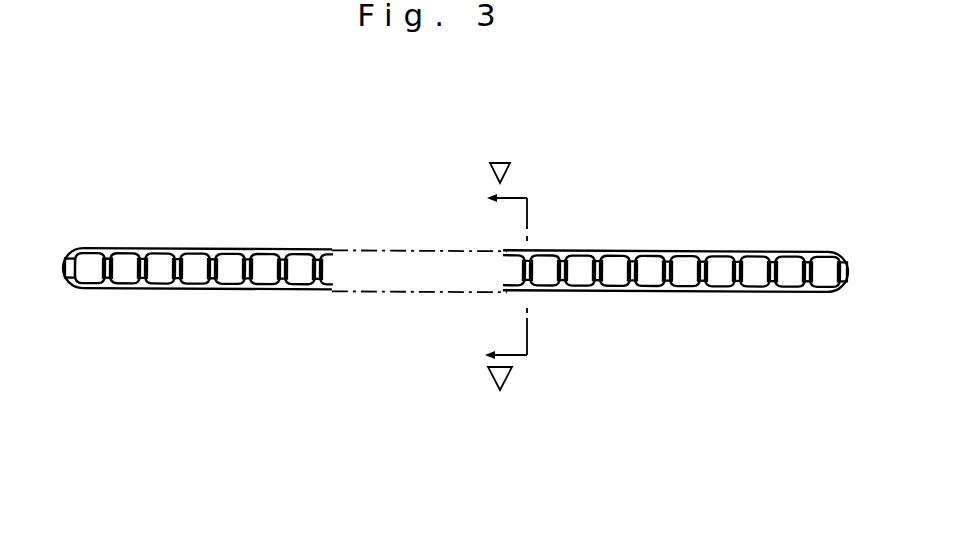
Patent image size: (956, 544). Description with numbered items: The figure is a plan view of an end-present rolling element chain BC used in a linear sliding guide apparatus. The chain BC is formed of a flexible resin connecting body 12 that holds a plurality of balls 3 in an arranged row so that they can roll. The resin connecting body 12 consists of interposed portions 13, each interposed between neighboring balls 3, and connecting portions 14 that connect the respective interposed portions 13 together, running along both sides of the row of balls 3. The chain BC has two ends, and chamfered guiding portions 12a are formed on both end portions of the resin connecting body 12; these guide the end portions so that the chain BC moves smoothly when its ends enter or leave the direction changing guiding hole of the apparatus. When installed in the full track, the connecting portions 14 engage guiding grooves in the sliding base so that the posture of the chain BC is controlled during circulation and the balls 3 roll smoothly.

The balls 3 is at (92, 260).
The resin connecting body 12 is at (455, 270).
The chamfered guiding portions 12a is at (71, 254).
The interposed portions 13 is at (314, 262).
The connecting portions 14 is at (246, 248).
The end-present rolling element chain BC is at (560, 238).